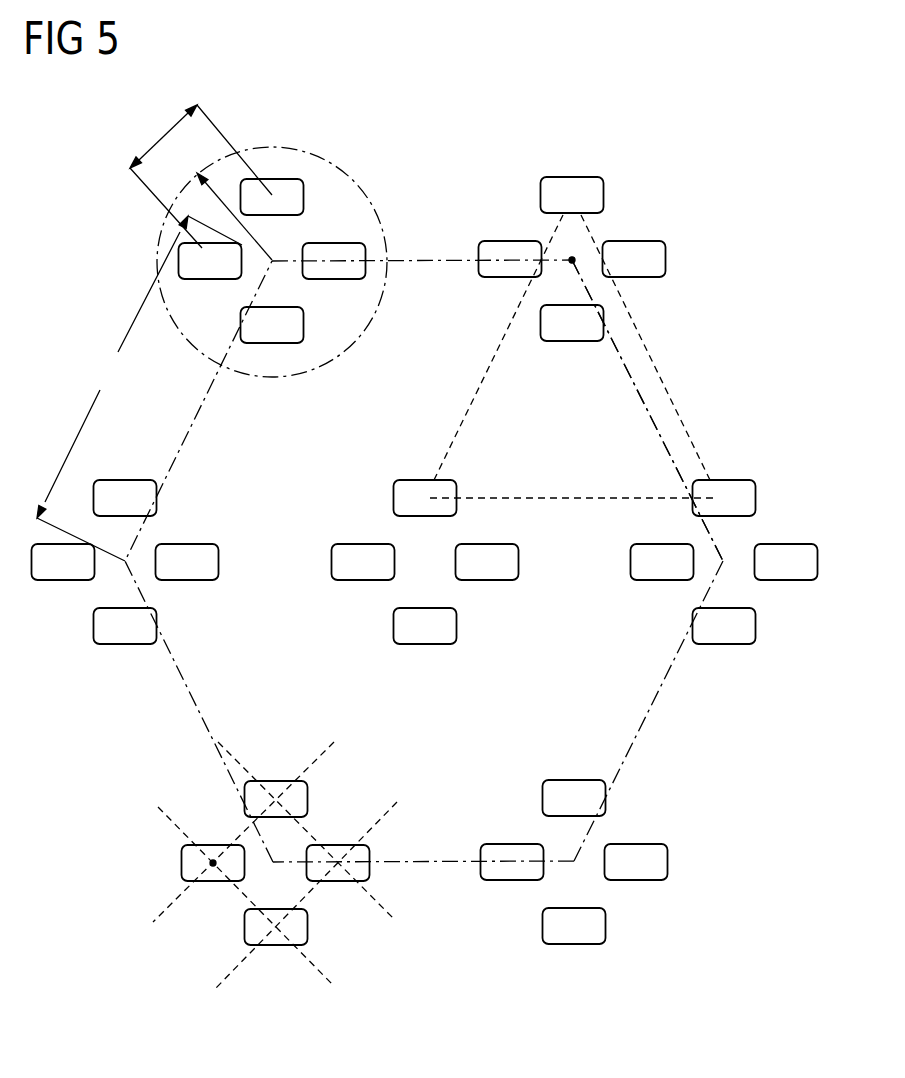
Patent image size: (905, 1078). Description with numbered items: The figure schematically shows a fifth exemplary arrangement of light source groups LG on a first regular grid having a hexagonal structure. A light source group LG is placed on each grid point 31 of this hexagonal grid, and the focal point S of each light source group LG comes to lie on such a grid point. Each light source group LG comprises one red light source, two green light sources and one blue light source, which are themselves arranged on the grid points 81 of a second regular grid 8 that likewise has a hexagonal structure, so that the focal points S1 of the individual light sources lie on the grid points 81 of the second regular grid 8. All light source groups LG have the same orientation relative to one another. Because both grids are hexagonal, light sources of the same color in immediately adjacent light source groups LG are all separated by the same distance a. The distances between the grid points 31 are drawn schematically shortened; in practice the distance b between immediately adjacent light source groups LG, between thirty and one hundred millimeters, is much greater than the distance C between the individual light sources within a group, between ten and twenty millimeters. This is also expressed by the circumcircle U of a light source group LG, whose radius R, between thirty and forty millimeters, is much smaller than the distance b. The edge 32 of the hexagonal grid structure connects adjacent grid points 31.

The light source group LG is at (653, 200).
The focal point of the light sources S1 is at (206, 826).
The focal point of the light source group S is at (586, 244).
The grid point 31 is at (552, 250).
The edge of hexagon 32 is at (630, 380).
The second regular grid 8 is at (177, 827).
The grid point of the second regular grid 81 is at (221, 886).
The circumcircle U is at (308, 147).
The radius of the circumcircle R is at (253, 228).
The distance between individual light sources C is at (201, 175).
The distance between immediately adjacent grid points b is at (139, 388).
The distance between light sources of one color a is at (490, 367).